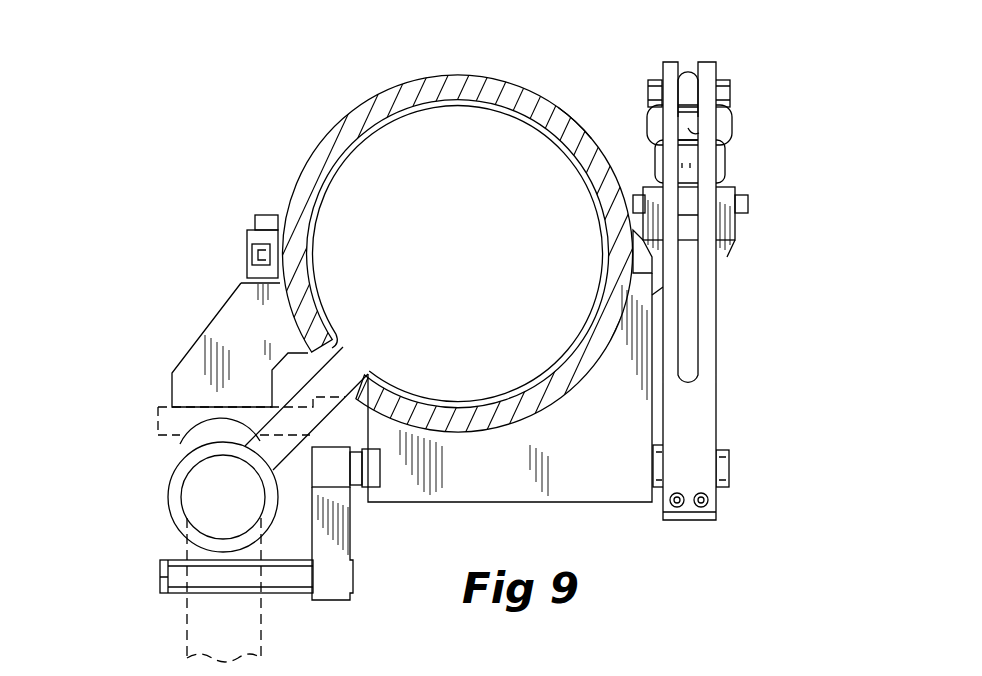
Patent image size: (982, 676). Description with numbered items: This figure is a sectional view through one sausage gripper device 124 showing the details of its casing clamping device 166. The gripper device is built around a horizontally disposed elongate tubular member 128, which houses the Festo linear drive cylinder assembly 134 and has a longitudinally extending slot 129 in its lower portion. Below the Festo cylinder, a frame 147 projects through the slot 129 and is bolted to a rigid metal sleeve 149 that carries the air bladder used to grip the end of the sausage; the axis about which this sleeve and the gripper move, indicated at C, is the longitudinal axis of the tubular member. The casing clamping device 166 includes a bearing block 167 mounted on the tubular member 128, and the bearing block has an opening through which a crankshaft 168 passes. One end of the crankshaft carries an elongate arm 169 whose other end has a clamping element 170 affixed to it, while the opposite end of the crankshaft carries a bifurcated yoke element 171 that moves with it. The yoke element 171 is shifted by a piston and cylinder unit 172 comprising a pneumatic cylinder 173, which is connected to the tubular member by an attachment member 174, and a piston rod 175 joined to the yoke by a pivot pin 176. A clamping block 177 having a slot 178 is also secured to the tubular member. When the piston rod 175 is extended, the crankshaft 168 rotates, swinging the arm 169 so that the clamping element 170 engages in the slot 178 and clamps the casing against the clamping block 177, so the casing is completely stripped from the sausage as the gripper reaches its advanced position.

The sausage gripper device 124 is at (358, 102).
The elongate tubular member 128 is at (445, 74).
The Festo linear drive cylinder assembly 134 is at (543, 131).
The longitudinally extending slot 129 is at (340, 345).
The casing clamping device 166 is at (115, 266).
The bearing block 167 is at (516, 503).
The crankshaft 168 is at (730, 462).
The elongate arm 169 is at (342, 542).
The clamping element 170 is at (166, 575).
The bifurcated yoke element 171 is at (716, 286).
The piston and cylinder unit 172 is at (735, 126).
The pneumatic cylinder 173 is at (732, 150).
The attachment member 174 is at (247, 243).
The piston rod 175 is at (692, 136).
The pivot pin 176 is at (733, 85).
The clamping block 177 is at (190, 347).
The slot 178 is at (158, 421).
The frame 147 is at (185, 442).
The rigid sleeve 149 is at (175, 486).
The axis C is at (265, 645).